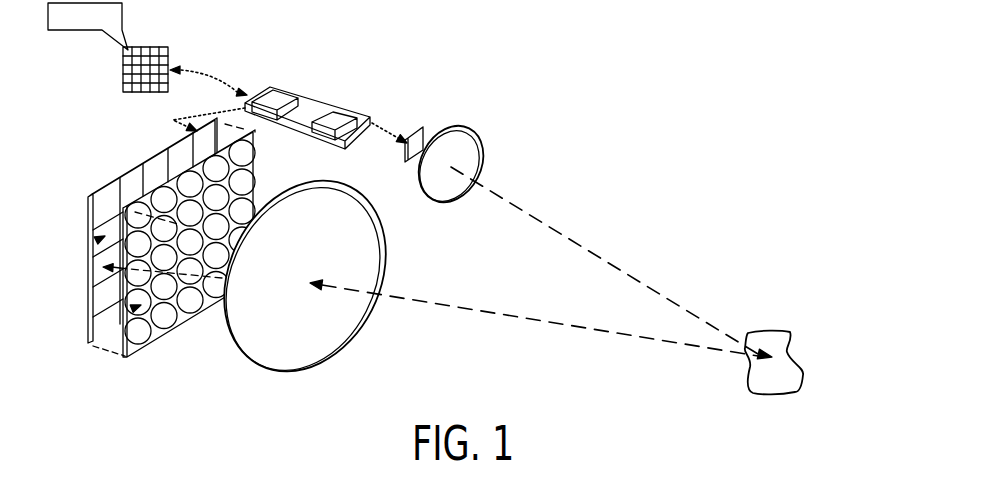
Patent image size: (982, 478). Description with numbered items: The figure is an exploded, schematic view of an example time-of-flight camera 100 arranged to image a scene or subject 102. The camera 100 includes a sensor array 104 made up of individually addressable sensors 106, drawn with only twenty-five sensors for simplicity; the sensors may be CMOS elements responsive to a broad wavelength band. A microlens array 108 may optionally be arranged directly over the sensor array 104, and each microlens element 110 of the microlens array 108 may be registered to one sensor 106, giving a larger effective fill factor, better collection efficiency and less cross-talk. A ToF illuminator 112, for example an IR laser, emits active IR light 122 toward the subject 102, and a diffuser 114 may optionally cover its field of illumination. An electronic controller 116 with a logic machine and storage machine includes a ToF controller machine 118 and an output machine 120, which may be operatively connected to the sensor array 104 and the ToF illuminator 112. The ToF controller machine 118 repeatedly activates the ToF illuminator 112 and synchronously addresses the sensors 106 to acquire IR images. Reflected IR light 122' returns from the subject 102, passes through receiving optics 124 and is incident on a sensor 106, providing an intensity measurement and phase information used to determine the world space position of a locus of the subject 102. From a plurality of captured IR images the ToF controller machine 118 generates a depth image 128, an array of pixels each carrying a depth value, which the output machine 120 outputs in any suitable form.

The ToF camera 100 is at (724, 44).
The subject 102 is at (778, 332).
The sensor array 104 is at (108, 185).
The sensor 106 is at (98, 240).
The microlens array 108 is at (151, 252).
The microlens element 110 is at (132, 309).
The ToF illuminator 112 is at (421, 152).
The diffuser 114 is at (486, 143).
The electronic controller 116 is at (307, 114).
The ToF controller machine 118 is at (352, 148).
The output machine 120 is at (291, 94).
The active IR light 122 is at (604, 260).
The reflected IR light 122' is at (534, 318).
The receiving optics 124 is at (307, 371).
The depth image 128 is at (148, 47).